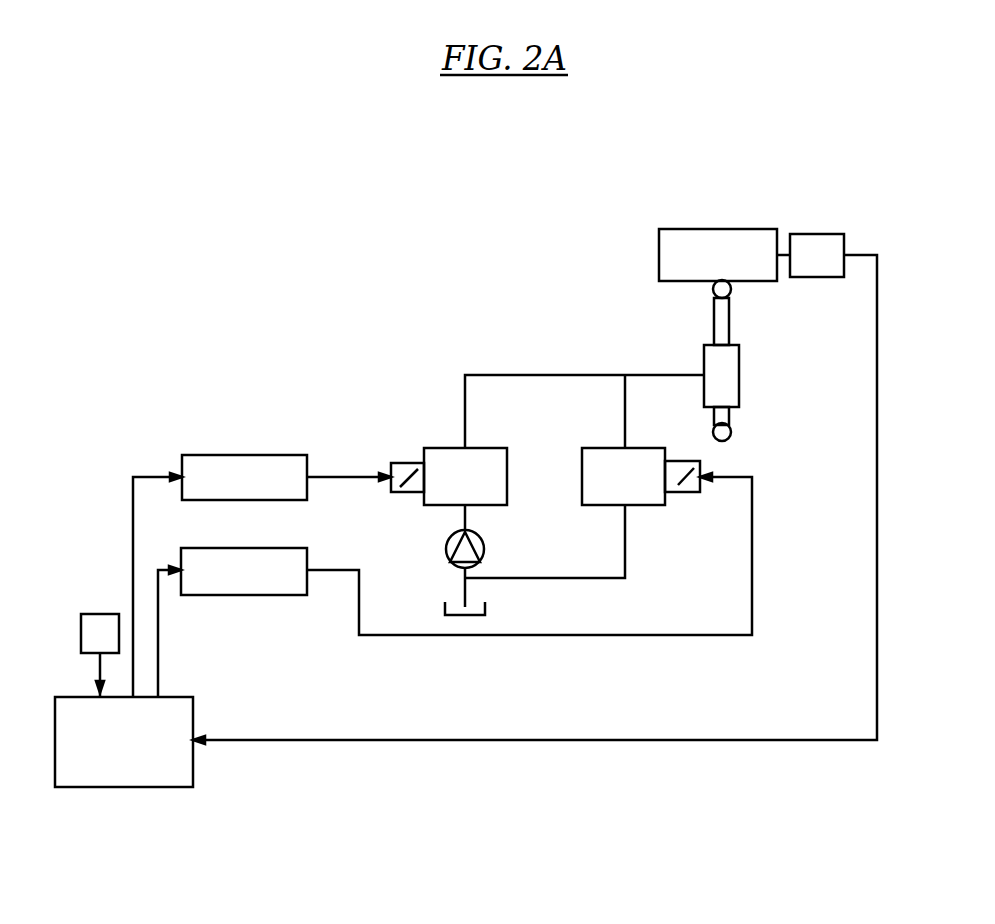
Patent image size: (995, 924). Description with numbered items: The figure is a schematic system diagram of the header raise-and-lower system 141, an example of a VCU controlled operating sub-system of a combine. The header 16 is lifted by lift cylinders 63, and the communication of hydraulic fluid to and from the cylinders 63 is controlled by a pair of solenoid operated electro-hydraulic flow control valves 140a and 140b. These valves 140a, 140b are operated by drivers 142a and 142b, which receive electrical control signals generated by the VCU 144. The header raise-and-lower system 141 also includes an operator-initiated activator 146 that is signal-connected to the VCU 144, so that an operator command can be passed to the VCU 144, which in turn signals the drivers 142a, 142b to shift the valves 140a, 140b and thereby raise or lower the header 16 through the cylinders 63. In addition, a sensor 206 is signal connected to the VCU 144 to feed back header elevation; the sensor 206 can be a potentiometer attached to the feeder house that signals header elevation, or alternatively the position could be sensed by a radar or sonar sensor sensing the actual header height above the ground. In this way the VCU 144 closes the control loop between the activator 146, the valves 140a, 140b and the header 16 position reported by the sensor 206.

The header 16 is at (657, 257).
The lift cylinders 63 is at (739, 366).
The electro-hydraulic flow control valve 140a is at (437, 448).
The electro-hydraulic flow control valve 140b is at (598, 448).
The header raise-and-lower system 141 is at (397, 308).
The driver 142a is at (196, 455).
The driver 142b is at (196, 595).
The VCU 144 is at (205, 772).
The operator-initiated activator 146 is at (100, 614).
The sensor 206 is at (813, 234).